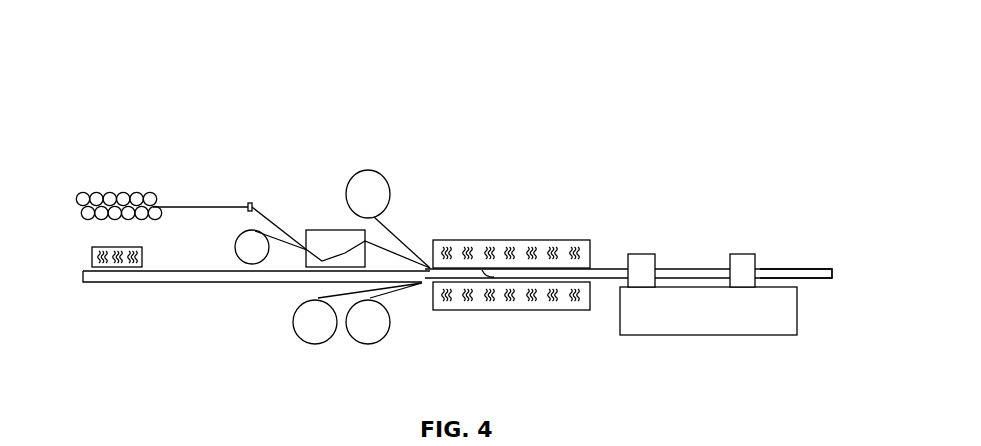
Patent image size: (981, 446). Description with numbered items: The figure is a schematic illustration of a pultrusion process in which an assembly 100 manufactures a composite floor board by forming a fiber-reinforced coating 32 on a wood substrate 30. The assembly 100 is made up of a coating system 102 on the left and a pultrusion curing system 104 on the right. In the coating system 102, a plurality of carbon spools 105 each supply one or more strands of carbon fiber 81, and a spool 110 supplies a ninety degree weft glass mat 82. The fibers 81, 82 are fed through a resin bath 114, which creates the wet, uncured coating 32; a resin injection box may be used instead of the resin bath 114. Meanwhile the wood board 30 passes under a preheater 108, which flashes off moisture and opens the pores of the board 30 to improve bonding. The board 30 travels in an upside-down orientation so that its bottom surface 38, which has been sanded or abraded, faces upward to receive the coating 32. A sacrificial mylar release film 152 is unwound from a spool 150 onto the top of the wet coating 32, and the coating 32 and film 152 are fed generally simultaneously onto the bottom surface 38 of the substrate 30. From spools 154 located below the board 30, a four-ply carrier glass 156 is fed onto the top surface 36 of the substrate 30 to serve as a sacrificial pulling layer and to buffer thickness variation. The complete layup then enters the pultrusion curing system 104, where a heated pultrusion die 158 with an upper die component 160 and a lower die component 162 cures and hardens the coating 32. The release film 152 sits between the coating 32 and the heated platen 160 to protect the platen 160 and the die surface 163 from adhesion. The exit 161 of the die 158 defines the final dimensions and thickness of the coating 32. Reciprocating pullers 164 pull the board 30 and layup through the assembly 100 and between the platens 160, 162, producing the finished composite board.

The assembly 100 is at (128, 63).
The coating system 102 is at (214, 127).
The pultrusion curing system 104 is at (508, 166).
The carbon spools 105 is at (110, 192).
The carbon fiber 81 is at (203, 206).
The top surface 36 is at (198, 271).
The bottom surface 38 is at (83, 272).
The wood substrate 30 is at (122, 281).
The preheater 108 is at (147, 258).
The spool 110 is at (250, 264).
The weft glass mat 82 is at (291, 244).
The resin bath 114 is at (309, 221).
The spool 150 is at (367, 170).
The release film 152 is at (399, 240).
The spools 154 is at (315, 345).
The carrier glass 156 is at (397, 293).
The heated pultrusion die 158 is at (560, 186).
The upper die component 160 is at (577, 244).
The exit 161 is at (597, 268).
The lower die component 162 is at (563, 297).
The die surface 163 is at (494, 265).
The reciprocating pullers 164 is at (658, 260).
The fiber-reinforced coating 32 is at (813, 265).